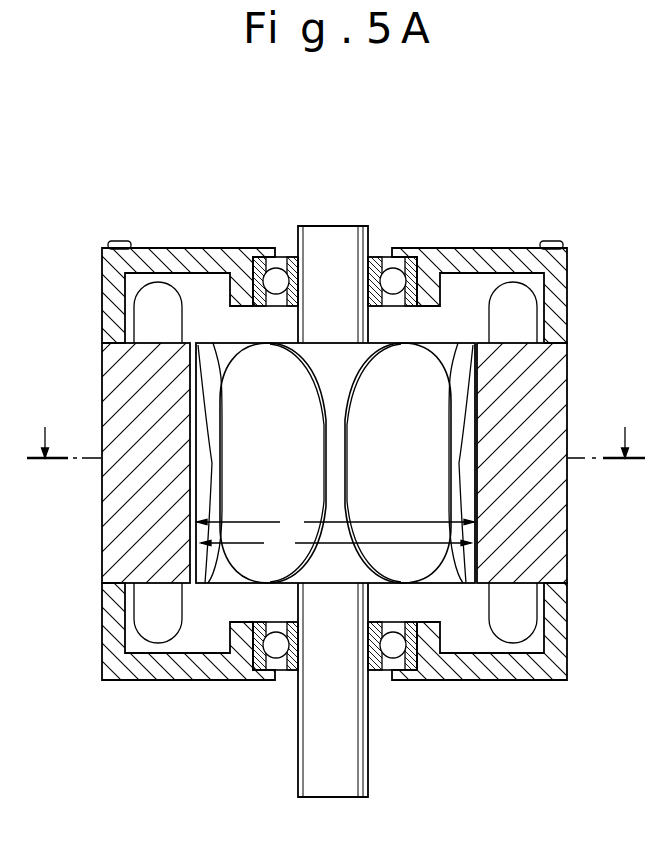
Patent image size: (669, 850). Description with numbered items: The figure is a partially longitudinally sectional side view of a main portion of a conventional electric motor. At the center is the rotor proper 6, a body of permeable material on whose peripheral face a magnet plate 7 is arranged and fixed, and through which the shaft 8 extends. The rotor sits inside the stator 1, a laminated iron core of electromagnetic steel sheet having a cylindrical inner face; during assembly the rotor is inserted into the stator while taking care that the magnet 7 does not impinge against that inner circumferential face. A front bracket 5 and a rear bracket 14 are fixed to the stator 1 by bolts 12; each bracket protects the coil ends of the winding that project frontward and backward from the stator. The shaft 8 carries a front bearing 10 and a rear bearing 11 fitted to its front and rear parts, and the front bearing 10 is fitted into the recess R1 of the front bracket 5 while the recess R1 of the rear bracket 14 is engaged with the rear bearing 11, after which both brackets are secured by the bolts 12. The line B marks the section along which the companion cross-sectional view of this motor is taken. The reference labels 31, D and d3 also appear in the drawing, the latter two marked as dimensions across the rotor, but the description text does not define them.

The stator 1 is at (108, 395).
The front bracket 5 is at (161, 680).
The rotor proper 6 is at (395, 446).
The magnet plate 7 is at (443, 421).
The shaft 8 is at (299, 766).
The front bearing 10 is at (405, 680).
The rear bearing 11 is at (378, 257).
The bolts 12 is at (120, 241).
The rear bracket 14 is at (209, 248).
The stator coil end 31 is at (524, 317).
The recess R1 is at (267, 704).
The rotor outer diameter D is at (335, 522).
The magnet diameter d3 is at (336, 545).
The line B— B is at (336, 440).